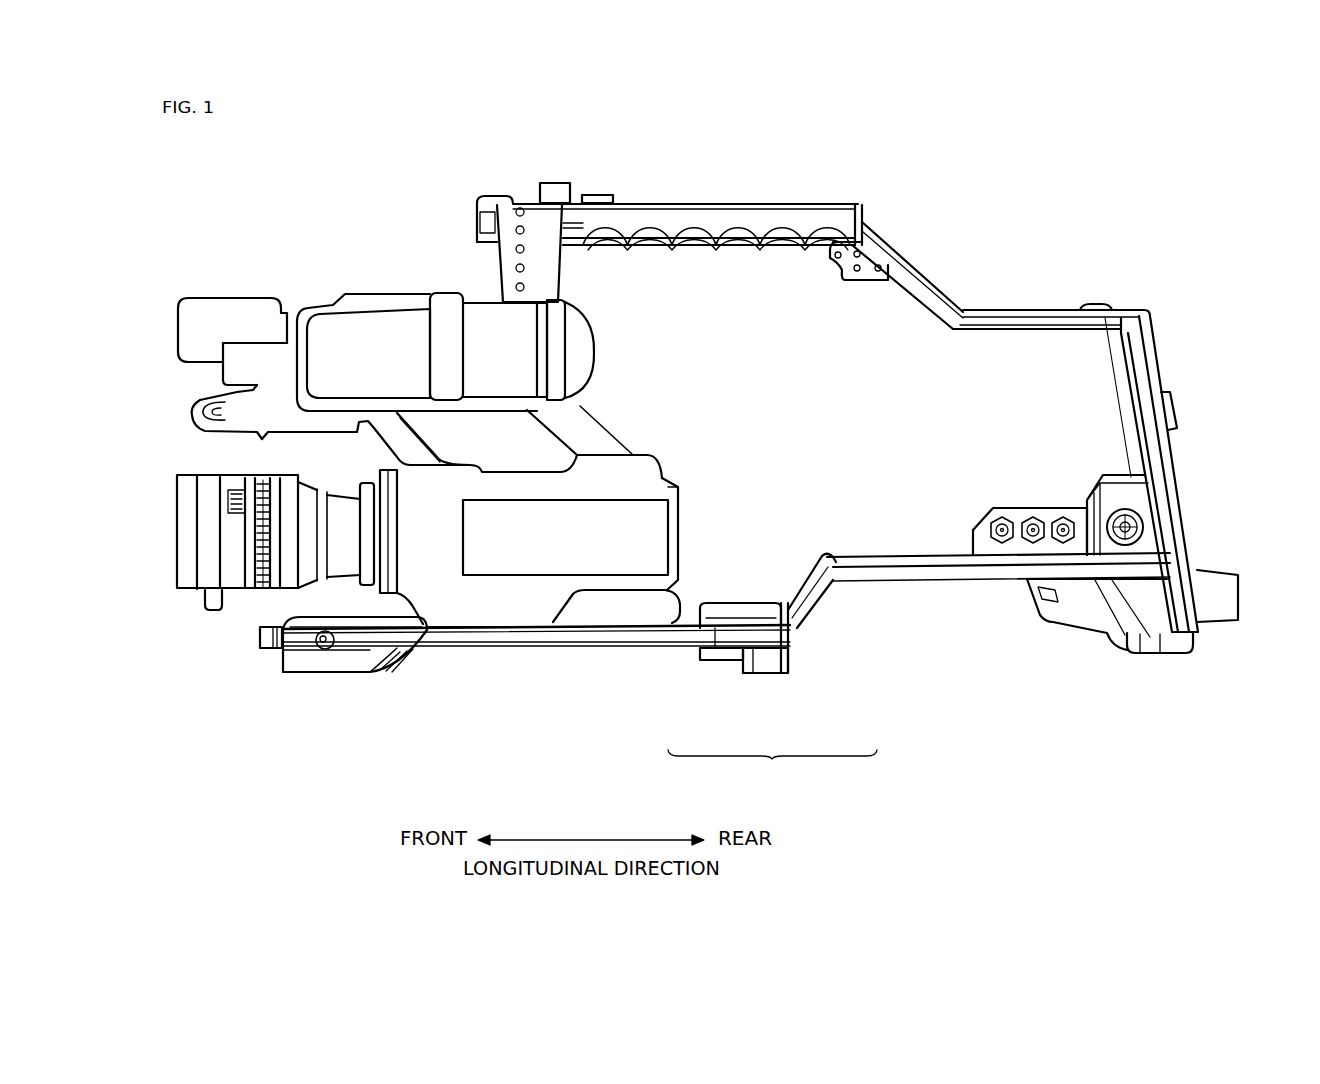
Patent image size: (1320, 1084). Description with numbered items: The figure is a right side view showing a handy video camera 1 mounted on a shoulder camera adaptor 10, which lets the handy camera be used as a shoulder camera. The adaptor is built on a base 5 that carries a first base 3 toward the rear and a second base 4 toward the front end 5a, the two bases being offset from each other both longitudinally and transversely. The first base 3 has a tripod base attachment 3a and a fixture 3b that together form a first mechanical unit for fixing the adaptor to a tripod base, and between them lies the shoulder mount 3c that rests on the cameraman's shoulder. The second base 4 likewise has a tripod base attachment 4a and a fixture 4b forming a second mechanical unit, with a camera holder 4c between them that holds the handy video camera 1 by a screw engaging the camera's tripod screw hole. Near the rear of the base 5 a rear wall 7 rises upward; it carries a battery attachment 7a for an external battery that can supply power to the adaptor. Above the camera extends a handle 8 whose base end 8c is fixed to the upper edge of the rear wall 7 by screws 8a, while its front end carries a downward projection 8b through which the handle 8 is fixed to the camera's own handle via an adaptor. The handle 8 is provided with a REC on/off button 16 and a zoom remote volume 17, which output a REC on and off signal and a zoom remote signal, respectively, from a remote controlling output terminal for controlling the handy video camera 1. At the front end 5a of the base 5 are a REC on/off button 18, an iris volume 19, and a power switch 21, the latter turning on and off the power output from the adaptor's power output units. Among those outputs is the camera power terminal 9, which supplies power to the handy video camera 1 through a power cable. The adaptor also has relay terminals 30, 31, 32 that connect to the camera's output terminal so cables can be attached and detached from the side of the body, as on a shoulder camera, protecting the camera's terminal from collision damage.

The handy video camera 1 is at (375, 268).
The first base 3 is at (895, 655).
The tripod base attachment 3a is at (720, 661).
The fixture for the tripod base attachment 3b is at (1148, 655).
The shoulder mount 3c is at (918, 583).
The second base 4 is at (598, 667).
The tripod base attachment 4a is at (302, 672).
The fixture for the tripod base attachment 4b is at (765, 673).
The camera holder 4c is at (490, 648).
The base 5 is at (728, 624).
The front end 5a is at (290, 628).
The rear wall 7 is at (1123, 410).
The battery attachment 7a is at (1183, 452).
The handle 8 is at (700, 222).
The screws 8a is at (1097, 303).
The projection 8b is at (555, 268).
The base end 8c is at (1097, 320).
The camera power terminal 9 is at (1148, 527).
The shoulder camera adaptor 10 is at (1072, 242).
The REC on/off button 16 is at (600, 197).
The zoom remote volume 17 is at (553, 185).
The REC on/off button 18 is at (283, 652).
The iris volume 19 is at (260, 638).
The power switch 21 is at (330, 650).
The relay terminal 30 is at (1000, 519).
The relay terminal 31 is at (1033, 519).
The relay terminal 32 is at (1063, 519).